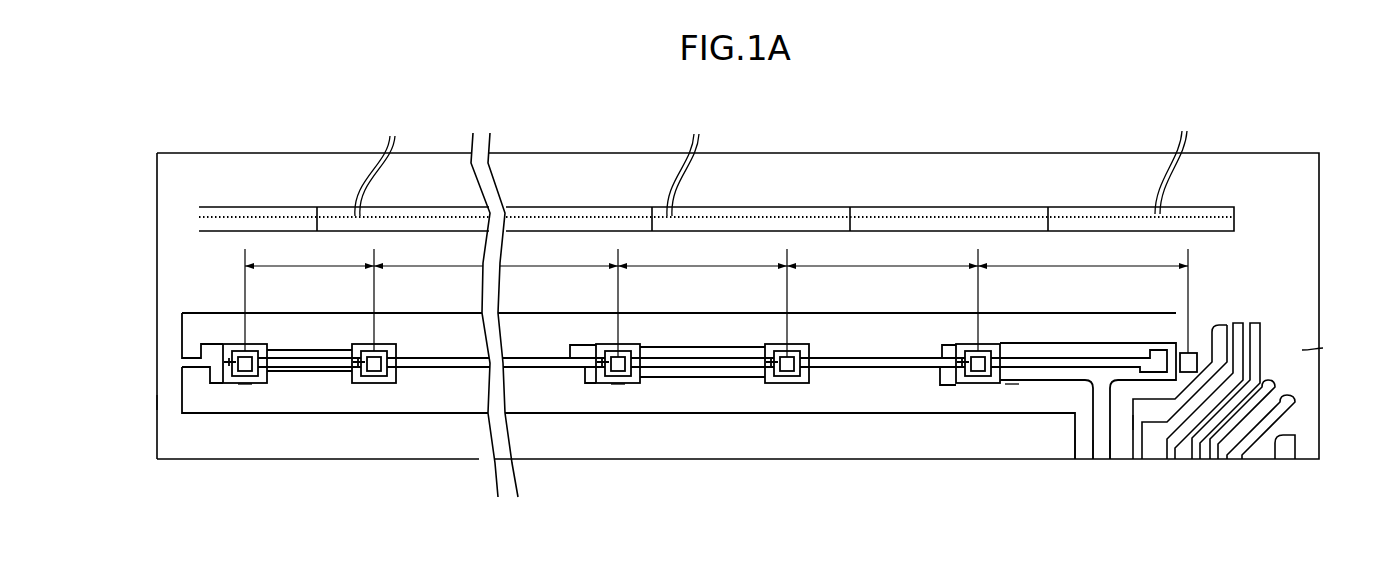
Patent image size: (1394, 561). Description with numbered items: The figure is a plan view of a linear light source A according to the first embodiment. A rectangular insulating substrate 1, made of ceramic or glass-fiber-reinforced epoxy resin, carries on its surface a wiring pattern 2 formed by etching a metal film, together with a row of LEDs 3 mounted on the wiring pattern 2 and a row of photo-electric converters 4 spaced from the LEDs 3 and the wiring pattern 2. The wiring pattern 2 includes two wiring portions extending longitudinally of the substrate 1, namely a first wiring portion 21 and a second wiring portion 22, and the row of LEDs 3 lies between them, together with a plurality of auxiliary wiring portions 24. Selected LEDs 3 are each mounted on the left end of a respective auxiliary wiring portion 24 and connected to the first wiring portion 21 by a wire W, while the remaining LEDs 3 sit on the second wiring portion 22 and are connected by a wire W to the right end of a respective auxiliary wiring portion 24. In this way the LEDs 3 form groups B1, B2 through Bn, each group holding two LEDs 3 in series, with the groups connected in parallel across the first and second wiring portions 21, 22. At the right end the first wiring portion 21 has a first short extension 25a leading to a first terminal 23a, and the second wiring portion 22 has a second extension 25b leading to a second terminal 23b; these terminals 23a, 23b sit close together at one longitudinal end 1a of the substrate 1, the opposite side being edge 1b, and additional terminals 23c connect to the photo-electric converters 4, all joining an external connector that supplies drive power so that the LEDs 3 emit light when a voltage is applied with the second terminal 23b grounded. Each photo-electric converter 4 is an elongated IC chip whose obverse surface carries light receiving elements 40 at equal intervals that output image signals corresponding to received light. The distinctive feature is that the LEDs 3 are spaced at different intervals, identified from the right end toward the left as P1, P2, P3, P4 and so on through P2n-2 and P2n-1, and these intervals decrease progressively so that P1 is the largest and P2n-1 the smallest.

The insulating substrate 1 is at (1270, 168).
The longitudinal end of the substrate 1a is at (1302, 350).
The substrate short side edge 1b is at (158, 402).
The wiring pattern 2 is at (679, 394).
The first wiring portion 21 is at (727, 397).
The second wiring portion 22 is at (848, 347).
The auxiliary wiring portion 24 is at (278, 363).
The LED 3 is at (253, 350).
The photo-electric converter 4 is at (244, 214).
The light receiving element 40 is at (778, 159).
The wire W is at (237, 357).
The LED group Bn is at (247, 388).
The LED group B2 is at (618, 388).
The LED group B1 is at (1018, 388).
The first terminal 23a is at (1081, 460).
The second terminal 23b is at (1134, 460).
The additional terminal 23c is at (1248, 460).
The first short extension 25a is at (1080, 428).
The second extension 25b is at (1133, 415).
The linear light source A is at (1248, 120).
The interval P1 is at (1086, 254).
The interval P2 is at (870, 254).
The interval P3 is at (700, 254).
The interval P4 is at (560, 254).
The interval P2n-1 is at (314, 254).
The interval P2n-2 is at (436, 254).